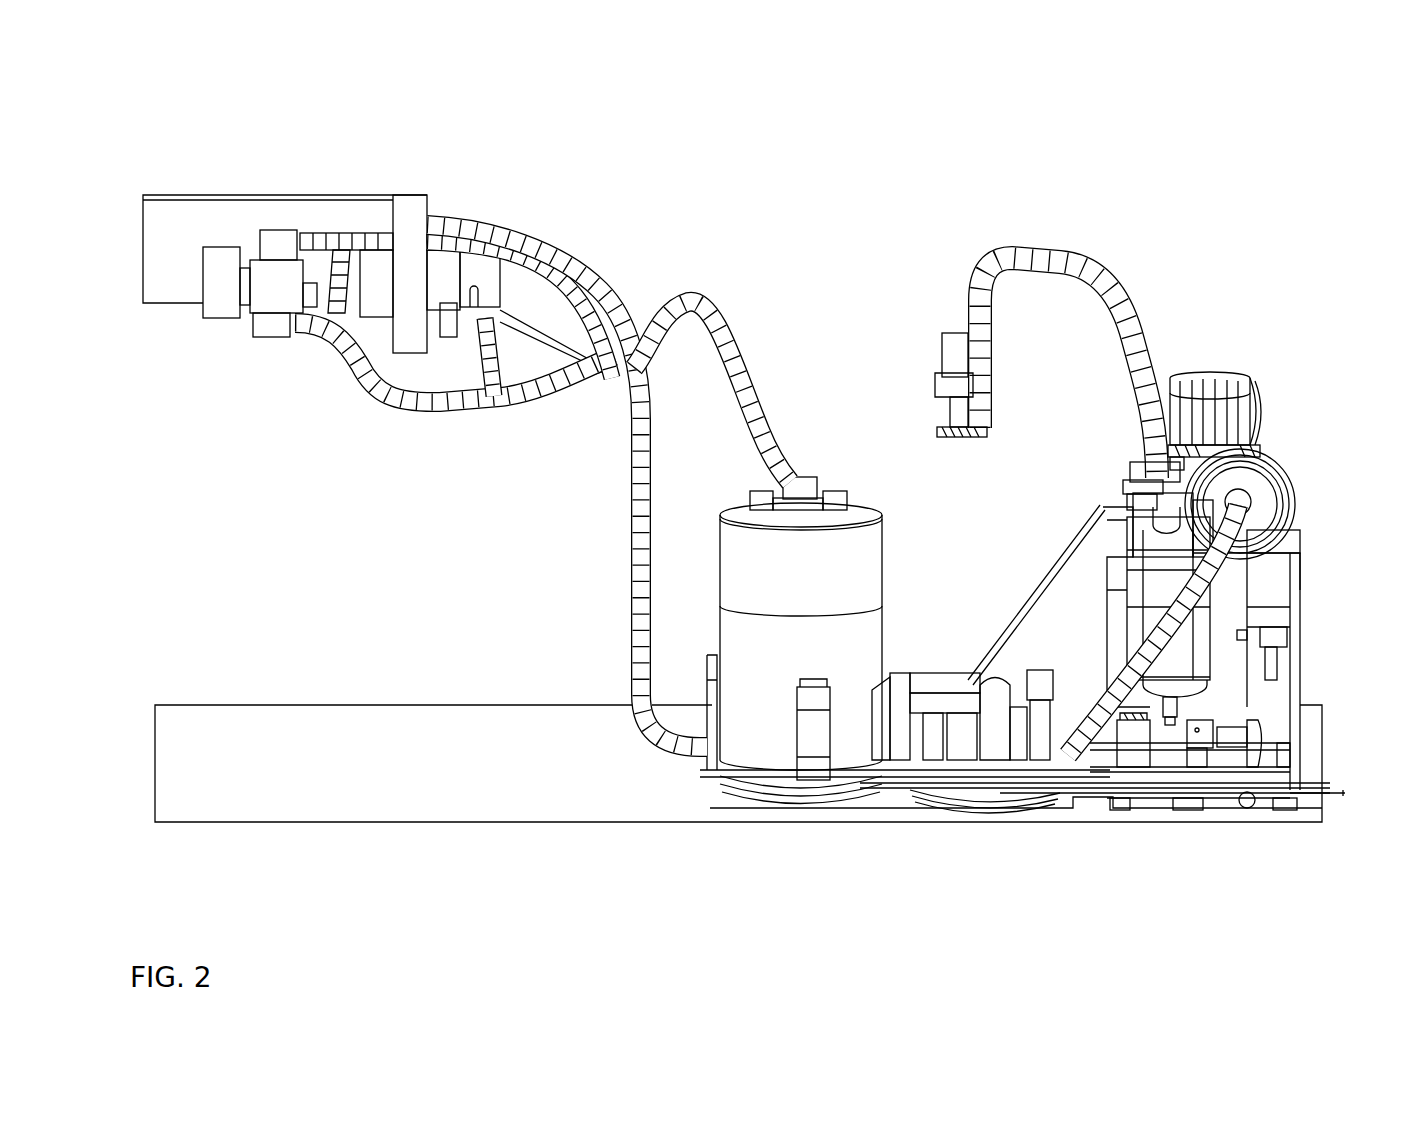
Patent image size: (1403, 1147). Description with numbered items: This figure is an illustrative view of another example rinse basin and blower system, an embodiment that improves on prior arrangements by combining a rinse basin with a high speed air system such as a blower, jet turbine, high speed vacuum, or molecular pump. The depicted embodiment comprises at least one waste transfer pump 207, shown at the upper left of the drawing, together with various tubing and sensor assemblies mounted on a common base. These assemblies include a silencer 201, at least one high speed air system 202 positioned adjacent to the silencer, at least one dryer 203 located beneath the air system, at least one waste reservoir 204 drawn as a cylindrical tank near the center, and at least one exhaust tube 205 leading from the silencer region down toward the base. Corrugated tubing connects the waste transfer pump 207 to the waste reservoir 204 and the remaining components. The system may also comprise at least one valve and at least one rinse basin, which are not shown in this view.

The silencer 201 is at (1285, 470).
The high speed air system 202 is at (1248, 375).
The dryer 203 is at (1120, 578).
The waste reservoir 204 is at (873, 553).
The exhaust tube 205 is at (1218, 585).
The waste transfer pump 207 is at (238, 195).